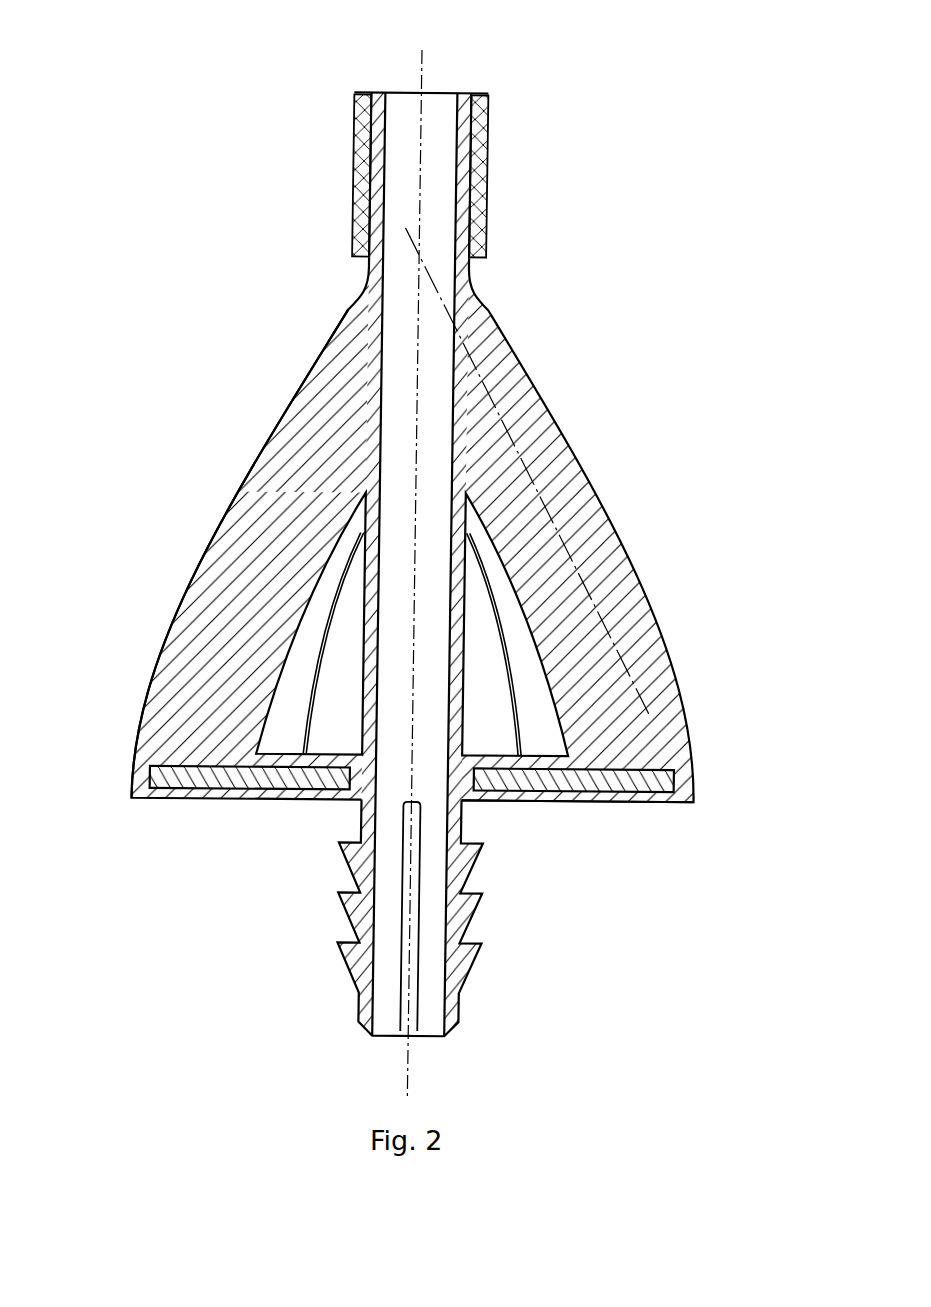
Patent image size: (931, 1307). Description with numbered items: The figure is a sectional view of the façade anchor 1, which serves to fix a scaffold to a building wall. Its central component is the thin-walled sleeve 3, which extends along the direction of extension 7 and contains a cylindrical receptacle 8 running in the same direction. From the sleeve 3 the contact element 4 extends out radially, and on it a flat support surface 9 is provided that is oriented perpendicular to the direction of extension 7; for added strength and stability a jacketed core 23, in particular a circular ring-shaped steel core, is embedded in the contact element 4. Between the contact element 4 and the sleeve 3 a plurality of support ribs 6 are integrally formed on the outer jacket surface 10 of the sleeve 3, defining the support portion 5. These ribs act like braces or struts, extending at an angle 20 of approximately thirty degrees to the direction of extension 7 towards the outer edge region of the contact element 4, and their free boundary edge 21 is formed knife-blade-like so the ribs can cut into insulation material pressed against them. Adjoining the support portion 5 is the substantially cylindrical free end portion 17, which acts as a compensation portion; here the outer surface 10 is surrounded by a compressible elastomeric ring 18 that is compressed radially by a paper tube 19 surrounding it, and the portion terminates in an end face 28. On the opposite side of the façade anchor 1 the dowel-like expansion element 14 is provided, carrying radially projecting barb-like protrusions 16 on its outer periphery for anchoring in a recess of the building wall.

The façade anchor 1 is at (221, 184).
The sleeve 3 is at (356, 703).
The contact element 4 is at (670, 818).
The support portion 5 is at (753, 261).
The support ribs 6 is at (303, 637).
The direction of extension 7 is at (418, 358).
The cylindrical receptacle 8 is at (397, 772).
The support surface 9 is at (589, 802).
The outer jacket surface 10 is at (468, 693).
The expansion element 14 is at (210, 955).
The barb-like protrusions 16 is at (473, 957).
The free end portion 17 is at (737, 95).
The elastomeric ring 18 is at (478, 173).
The paper tube 19 is at (487, 123).
The angle 20 is at (451, 323).
The free boundary edge 21 is at (231, 495).
The jacketed core 23 is at (227, 775).
The end face 28 is at (467, 90).